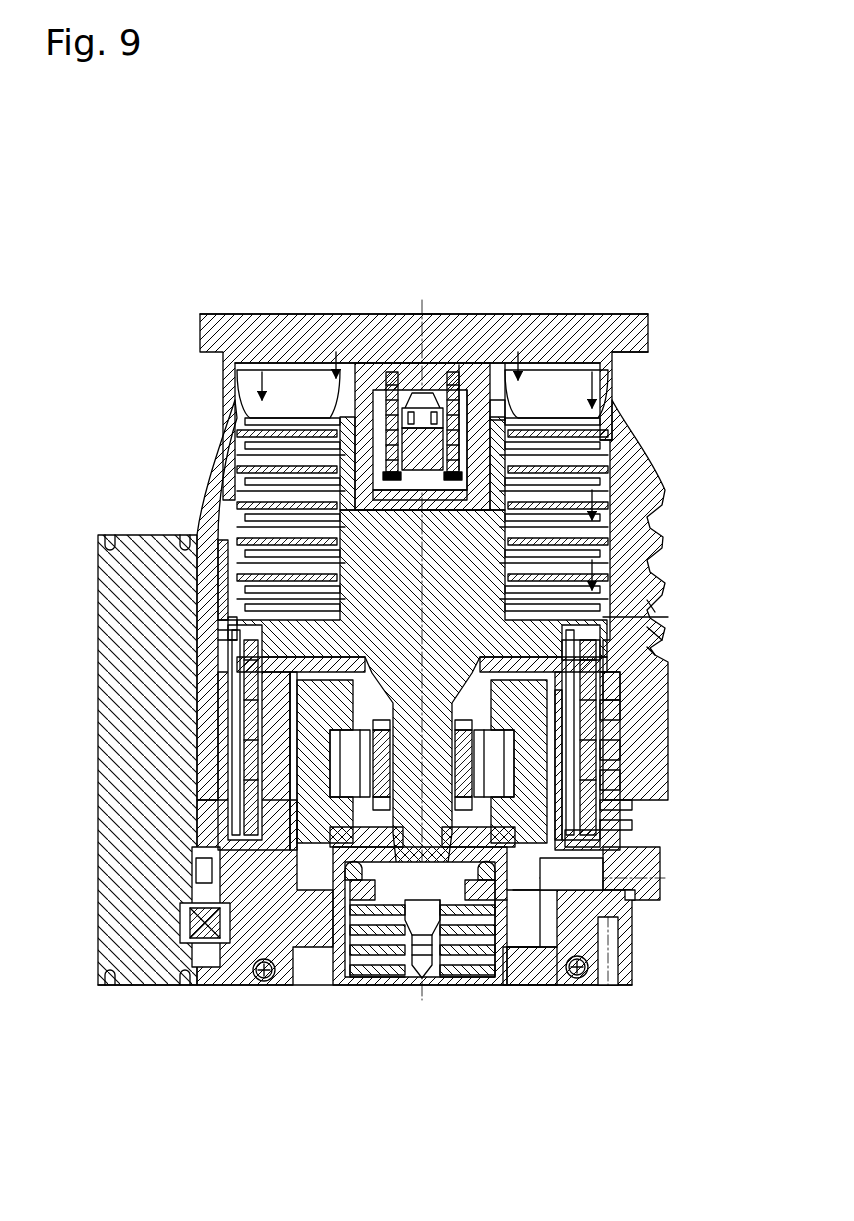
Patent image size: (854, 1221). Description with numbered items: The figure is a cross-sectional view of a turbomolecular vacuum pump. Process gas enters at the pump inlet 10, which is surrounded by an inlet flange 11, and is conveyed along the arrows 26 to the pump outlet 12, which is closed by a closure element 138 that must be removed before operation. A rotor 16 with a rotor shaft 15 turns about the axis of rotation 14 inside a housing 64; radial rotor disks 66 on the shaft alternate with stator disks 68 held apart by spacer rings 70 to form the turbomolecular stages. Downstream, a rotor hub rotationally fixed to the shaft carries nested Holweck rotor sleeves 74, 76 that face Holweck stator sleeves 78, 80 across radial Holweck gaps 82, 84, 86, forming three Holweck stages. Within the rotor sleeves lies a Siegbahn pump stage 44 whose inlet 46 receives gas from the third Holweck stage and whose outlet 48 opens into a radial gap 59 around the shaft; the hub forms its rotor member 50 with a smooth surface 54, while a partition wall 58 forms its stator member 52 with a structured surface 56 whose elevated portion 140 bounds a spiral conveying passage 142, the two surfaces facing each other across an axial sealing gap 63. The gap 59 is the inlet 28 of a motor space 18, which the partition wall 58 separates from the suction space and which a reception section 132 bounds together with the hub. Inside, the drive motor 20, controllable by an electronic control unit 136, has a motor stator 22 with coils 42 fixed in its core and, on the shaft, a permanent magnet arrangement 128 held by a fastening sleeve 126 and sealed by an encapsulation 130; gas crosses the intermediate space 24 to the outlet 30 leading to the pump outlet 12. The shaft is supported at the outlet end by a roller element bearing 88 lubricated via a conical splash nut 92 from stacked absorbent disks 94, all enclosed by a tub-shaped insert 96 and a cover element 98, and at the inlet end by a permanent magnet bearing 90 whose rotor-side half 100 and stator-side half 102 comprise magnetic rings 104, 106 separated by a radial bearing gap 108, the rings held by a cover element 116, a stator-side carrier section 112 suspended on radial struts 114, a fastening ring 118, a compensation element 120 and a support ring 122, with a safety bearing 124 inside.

The pump inlet 10 is at (568, 342).
The inlet flange 11 is at (648, 322).
The pump outlet 12 is at (613, 912).
The axis of rotation 14 is at (422, 325).
The rotor shaft 15 is at (628, 338).
The rotor 16 is at (232, 335).
The motor space 18 is at (667, 657).
The drive motor 20 is at (352, 788).
The motor stator 22 is at (300, 758).
The intermediate space 24 is at (332, 770).
The arrows 26 is at (582, 392).
The inlet of the motor space 28 is at (647, 600).
The outlet of the motor space 30 is at (606, 947).
The coils 42 is at (285, 738).
The Siegbahn pump stage 44 is at (232, 662).
The inlet of the Siegbahn pump stage 46 is at (240, 685).
The outlet of the Siegbahn pump stage 48 is at (268, 720).
The rotor member 50 is at (224, 640).
The stator member 52 is at (258, 700).
The surface acting as a pump 54 is at (647, 627).
The surface acting as a pump 56 is at (647, 647).
The partition wall 58 is at (627, 677).
The radial gap 59 is at (651, 606).
The axial sealing gap 63 is at (585, 733).
The housing 64 is at (222, 975).
The rotor disks 66 is at (587, 397).
The stator disks 68 is at (240, 432).
The spacer rings 70 is at (595, 470).
The outer Holweck rotor sleeve 74 is at (605, 753).
The inner Holweck rotor sleeve 76 is at (615, 780).
The outer Holweck stator sleeve 78 is at (598, 687).
The inner Holweck stator sleeve 80 is at (615, 713).
The radial Holweck gap 82 is at (630, 803).
The radial Holweck gap 84 is at (632, 822).
The radial Holweck gap 86 is at (617, 835).
The roller element bearing 88 is at (394, 962).
The permanent magnet bearing 90 is at (392, 380).
The splash nut 92 is at (422, 978).
The absorbent disks 94 is at (462, 965).
The tub-shaped insert 96 is at (520, 950).
The cover element 98 is at (305, 978).
The bearing half at the rotor side 100 is at (506, 372).
The bearing half at the stator side 102 is at (462, 365).
The magnetic rings at the rotor side 104 is at (490, 400).
The magnetic rings at the stator side 106 is at (462, 360).
The radial bearing gap 108 is at (508, 355).
The carrier section at the stator side 112 is at (466, 375).
The radial struts 114 is at (262, 376).
The cover element 116 is at (385, 420).
The fastening ring 118 is at (560, 340).
The compensation element 120 is at (345, 370).
The support ring 122 is at (385, 365).
The safety bearing 124 is at (411, 392).
The fastening sleeve 126 is at (346, 978).
The permanent magnet arrangement 128 is at (272, 800).
The encapsulation 130 is at (300, 790).
The reception section 132 is at (355, 765).
The electronic control unit 136 is at (136, 978).
The closure element 138 is at (653, 873).
The elevated portion 140 is at (216, 580).
The conveying passage 142 is at (216, 605).